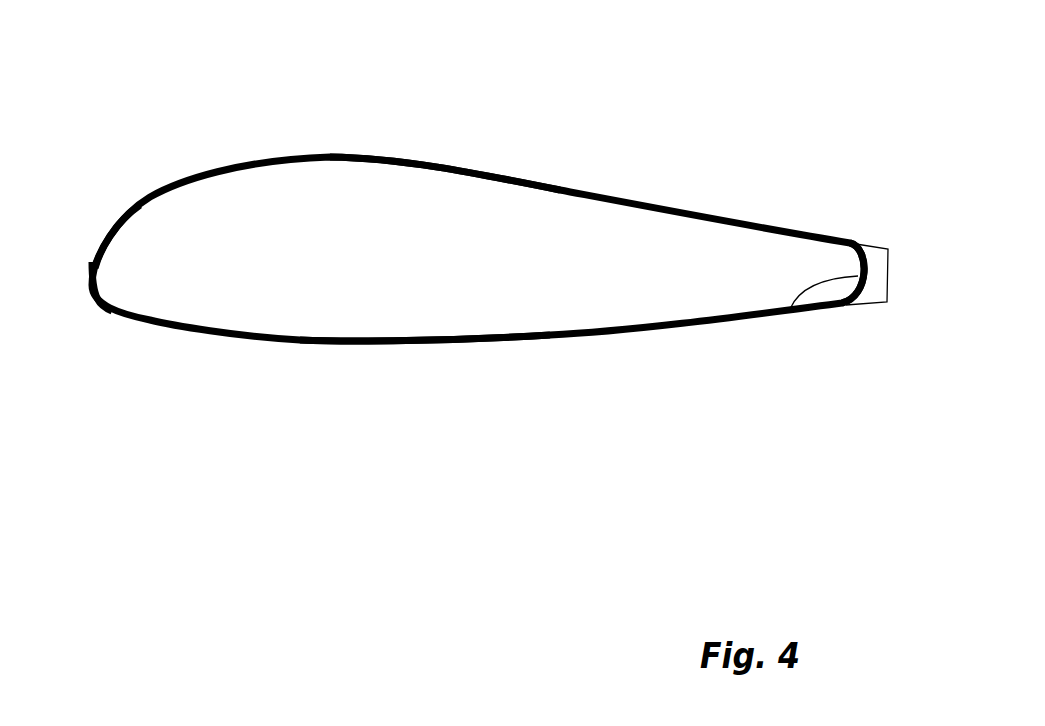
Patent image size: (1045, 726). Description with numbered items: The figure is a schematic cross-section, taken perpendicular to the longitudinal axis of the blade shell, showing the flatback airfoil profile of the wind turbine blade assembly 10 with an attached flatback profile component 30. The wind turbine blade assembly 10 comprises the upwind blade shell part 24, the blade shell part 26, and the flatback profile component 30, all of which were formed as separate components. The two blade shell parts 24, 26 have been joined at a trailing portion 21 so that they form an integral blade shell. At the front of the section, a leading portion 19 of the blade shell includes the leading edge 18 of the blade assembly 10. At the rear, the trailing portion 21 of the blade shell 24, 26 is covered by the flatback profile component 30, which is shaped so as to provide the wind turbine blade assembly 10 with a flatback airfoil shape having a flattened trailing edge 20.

The wind turbine blade assembly 10 is at (370, 421).
The leading edge 18 is at (93, 287).
The leading portion 19 is at (104, 238).
The flattened trailing edge 20 is at (889, 278).
The trailing portion 21 is at (790, 309).
The upwind blade shell part 24 is at (475, 165).
The blade shell part 26 is at (527, 340).
The flatback profile component 30 is at (859, 241).